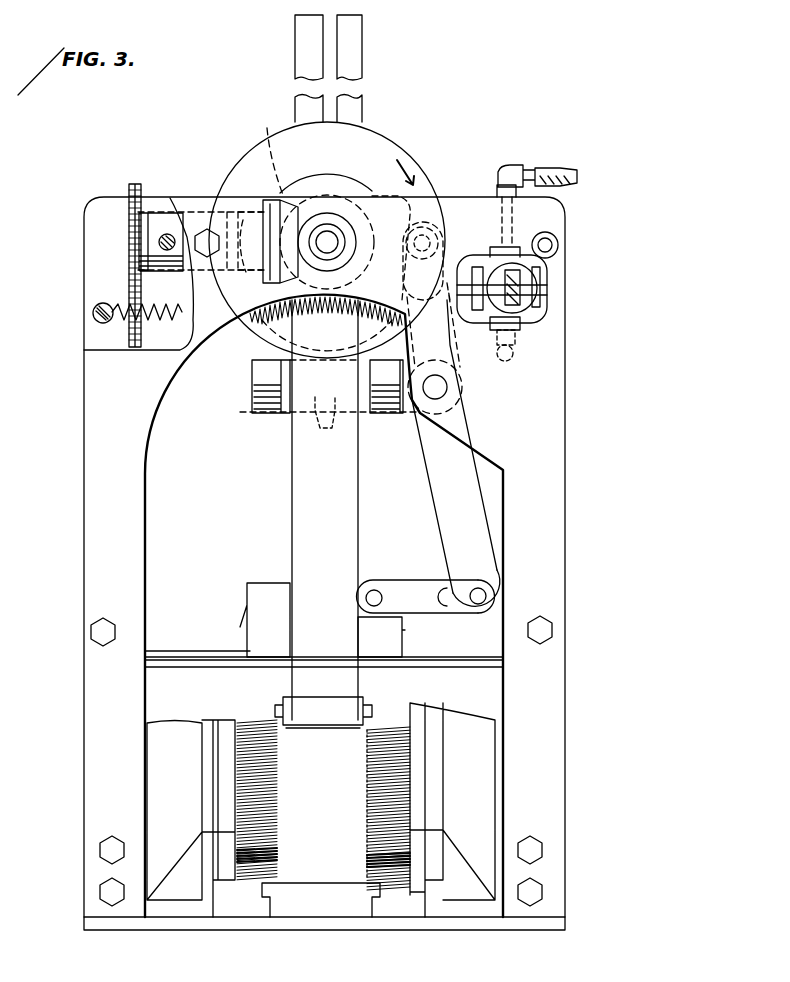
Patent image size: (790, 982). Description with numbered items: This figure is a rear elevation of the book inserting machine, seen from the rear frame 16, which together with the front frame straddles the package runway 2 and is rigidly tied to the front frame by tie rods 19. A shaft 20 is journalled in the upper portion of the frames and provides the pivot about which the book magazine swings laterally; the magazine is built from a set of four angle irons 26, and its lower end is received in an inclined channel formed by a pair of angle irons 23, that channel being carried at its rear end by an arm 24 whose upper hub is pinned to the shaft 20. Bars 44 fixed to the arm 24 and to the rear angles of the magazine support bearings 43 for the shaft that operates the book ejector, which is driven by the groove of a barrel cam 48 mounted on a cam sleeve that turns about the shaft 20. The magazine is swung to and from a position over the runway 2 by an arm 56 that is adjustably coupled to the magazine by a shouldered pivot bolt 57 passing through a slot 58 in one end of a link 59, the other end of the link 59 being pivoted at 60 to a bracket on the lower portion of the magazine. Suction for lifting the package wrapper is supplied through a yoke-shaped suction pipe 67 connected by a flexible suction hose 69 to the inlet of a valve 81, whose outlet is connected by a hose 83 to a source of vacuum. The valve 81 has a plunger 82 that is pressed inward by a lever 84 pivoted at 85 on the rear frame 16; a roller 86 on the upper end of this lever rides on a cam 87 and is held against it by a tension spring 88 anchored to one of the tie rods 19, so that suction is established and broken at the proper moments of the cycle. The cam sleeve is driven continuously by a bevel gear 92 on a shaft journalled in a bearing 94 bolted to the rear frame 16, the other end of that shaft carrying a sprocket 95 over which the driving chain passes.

The package runway 2 is at (438, 902).
The rear frame 16 is at (90, 510).
The tie rods 19 is at (96, 316).
The shaft 20 is at (329, 238).
The angle irons 23 is at (352, 725).
The arm 24 is at (290, 498).
The angle irons 26 is at (343, 37).
The bearings 43 is at (252, 409).
The bars 44 is at (288, 399).
The barrel cam 48 is at (369, 138).
The arm 56 is at (443, 499).
The shouldered pivot bolt 57 is at (487, 595).
The slot 58 is at (446, 597).
The link 59 is at (403, 585).
The pivot 60 is at (364, 599).
The suction pipe 67 is at (212, 662).
The flexible suction hose 69 is at (518, 357).
The valve 81 is at (528, 274).
The plunger 82 is at (484, 226).
The hose 83 is at (556, 160).
The lever 84 is at (463, 372).
The pivot 85 is at (440, 393).
The roller 86 is at (438, 192).
The cam 87 is at (383, 191).
The tension spring 88 is at (292, 302).
The bevel gear 92 is at (268, 142).
The bearing 94 is at (160, 222).
The sprocket 95 is at (134, 186).